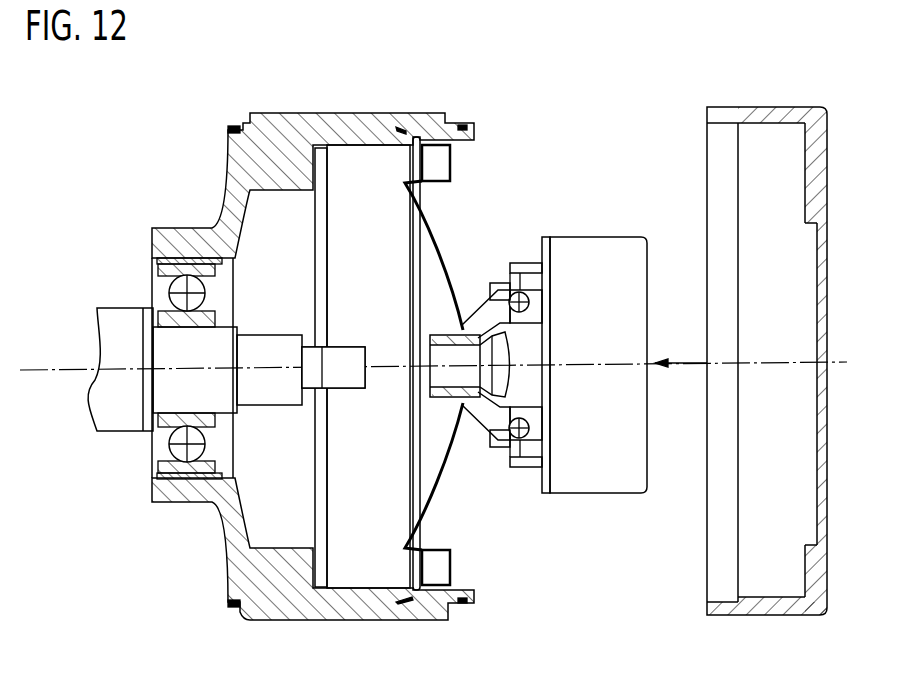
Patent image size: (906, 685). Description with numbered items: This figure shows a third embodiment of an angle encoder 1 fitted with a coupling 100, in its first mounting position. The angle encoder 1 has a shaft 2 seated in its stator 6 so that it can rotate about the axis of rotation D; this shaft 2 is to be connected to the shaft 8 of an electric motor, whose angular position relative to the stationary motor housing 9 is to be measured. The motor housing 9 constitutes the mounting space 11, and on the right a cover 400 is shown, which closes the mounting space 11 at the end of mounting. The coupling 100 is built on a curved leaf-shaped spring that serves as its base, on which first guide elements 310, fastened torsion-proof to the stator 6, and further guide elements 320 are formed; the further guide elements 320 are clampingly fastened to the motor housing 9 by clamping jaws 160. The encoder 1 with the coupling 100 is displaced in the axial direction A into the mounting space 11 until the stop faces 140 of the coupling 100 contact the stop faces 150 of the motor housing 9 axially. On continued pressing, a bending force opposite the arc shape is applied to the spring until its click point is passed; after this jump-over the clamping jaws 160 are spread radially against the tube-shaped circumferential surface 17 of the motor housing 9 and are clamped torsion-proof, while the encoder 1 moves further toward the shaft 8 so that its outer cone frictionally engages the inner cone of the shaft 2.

The axis of rotation D is at (40, 369).
The shaft of an electric motor 8 is at (345, 380).
The motor housing 9 is at (268, 600).
The coupling 100 is at (371, 398).
The mounting space 11 is at (354, 414).
The tube-shaped circumferential surface 17 is at (358, 150).
The stop faces of the coupling 140 is at (417, 137).
The stop faces of the motor housing 150 is at (397, 128).
The further guide elements 320 is at (433, 183).
The clamping jaws 160 is at (453, 168).
The shaft 2 is at (437, 398).
The first guide elements 310 is at (523, 332).
The stator 6 is at (538, 450).
The angle encoder 1 is at (647, 262).
The axial direction A is at (685, 362).
The cover 400 is at (770, 605).